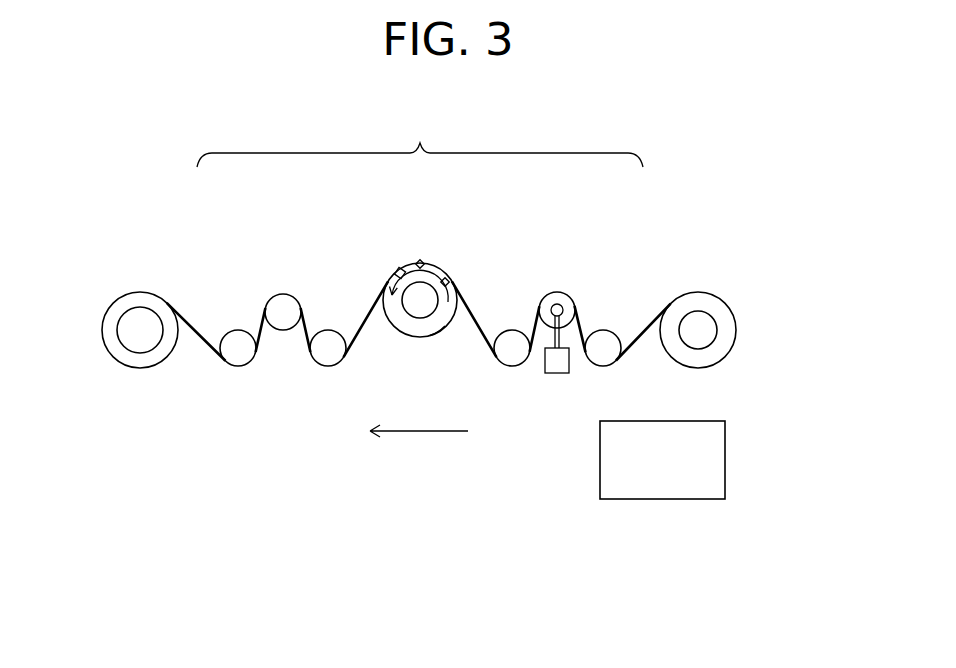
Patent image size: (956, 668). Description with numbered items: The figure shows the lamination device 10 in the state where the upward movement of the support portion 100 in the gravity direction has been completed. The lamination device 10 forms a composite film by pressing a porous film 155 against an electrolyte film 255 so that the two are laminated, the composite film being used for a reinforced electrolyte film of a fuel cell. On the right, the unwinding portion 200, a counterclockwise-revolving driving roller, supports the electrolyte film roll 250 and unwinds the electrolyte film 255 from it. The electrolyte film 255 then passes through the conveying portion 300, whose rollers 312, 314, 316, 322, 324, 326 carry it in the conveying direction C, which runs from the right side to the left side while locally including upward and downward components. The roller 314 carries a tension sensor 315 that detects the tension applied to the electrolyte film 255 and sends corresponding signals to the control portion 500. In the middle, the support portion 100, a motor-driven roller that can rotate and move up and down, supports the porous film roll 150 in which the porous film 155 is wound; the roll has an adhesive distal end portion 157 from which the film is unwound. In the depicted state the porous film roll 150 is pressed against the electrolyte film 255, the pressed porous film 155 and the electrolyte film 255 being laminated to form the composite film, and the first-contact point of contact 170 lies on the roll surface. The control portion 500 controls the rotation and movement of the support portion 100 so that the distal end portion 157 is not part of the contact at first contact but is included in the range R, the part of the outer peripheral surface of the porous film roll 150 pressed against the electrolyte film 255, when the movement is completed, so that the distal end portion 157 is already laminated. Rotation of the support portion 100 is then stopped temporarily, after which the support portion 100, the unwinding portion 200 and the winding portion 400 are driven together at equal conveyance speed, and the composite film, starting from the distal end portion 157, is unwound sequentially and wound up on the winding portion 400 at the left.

The lamination device 10 is at (718, 190).
The support portion 100 is at (422, 300).
The porous film roll 150 is at (402, 320).
The porous film 155 is at (443, 328).
The distal end portion 157 is at (398, 268).
The point of contact 170 is at (421, 262).
The range R is at (447, 280).
The unwinding portion 200 is at (698, 330).
The electrolyte film roll 250 is at (727, 330).
The electrolyte film 255 is at (657, 320).
The conveying portion 300 is at (420, 141).
The roller 312 is at (603, 330).
The roller 314 is at (557, 292).
The tension sensor 315 is at (557, 373).
The roller 316 is at (512, 330).
The roller 322 is at (327, 330).
The roller 324 is at (283, 293).
The roller 326 is at (238, 330).
The winding portion 400 is at (138, 332).
The control portion 500 is at (725, 458).
The conveying direction C is at (419, 443).